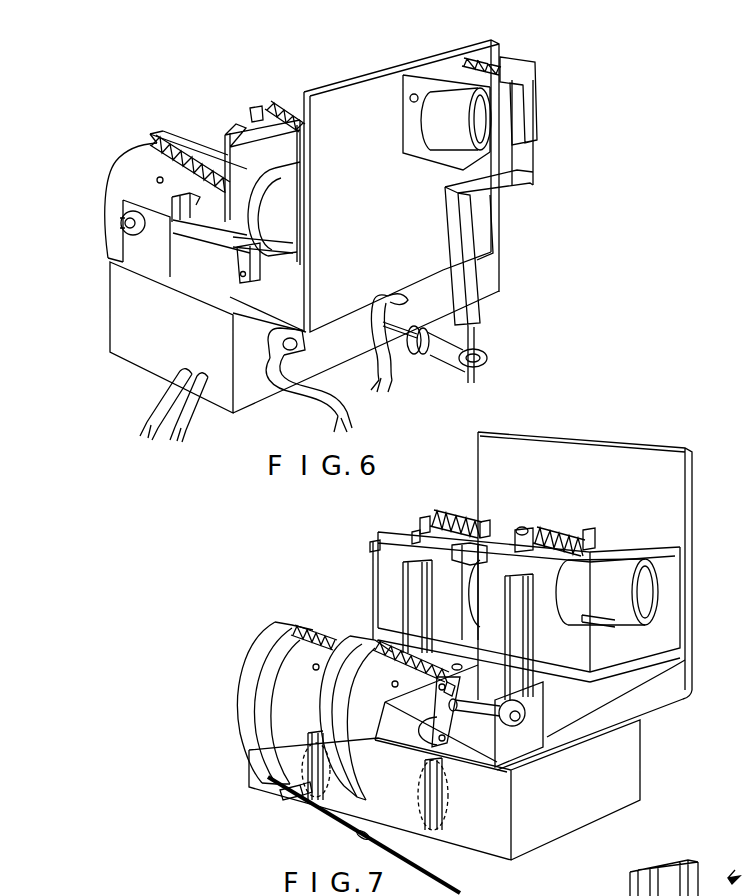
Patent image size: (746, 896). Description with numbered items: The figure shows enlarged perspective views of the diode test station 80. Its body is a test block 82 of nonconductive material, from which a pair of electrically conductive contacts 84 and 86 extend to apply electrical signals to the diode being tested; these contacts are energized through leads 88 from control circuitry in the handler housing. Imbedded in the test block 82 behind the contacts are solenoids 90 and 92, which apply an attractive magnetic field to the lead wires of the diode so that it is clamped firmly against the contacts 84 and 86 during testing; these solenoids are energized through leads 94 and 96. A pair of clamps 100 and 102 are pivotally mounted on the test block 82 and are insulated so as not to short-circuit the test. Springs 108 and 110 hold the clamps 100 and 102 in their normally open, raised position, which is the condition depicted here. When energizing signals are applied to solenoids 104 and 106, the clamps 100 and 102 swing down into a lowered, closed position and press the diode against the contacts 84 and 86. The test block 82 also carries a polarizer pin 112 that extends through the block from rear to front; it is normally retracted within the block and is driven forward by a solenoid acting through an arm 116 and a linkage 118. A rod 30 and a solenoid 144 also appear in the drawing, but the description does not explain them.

In FIG. 7, the rod 30 is at (368, 843).
In FIG. 6, the test station 80 is at (218, 105).
In FIG. 6, the test block 82 is at (133, 318).
In FIG. 7, the test block 82 is at (627, 775).
In FIG. 7, the electrically conductive contact 84 is at (447, 832).
In FIG. 7, the electrically conductive contact 86 is at (305, 797).
In FIG. 6, the lead 88 is at (194, 402).
In FIG. 7, the solenoid 90 is at (446, 820).
In FIG. 7, the solenoid 92 is at (300, 760).
In FIG. 6, the lead 94 is at (313, 398).
In FIG. 6, the lead 96 is at (387, 378).
In FIG. 6, the clamp 100 is at (133, 180).
In FIG. 7, the clamp 100 is at (357, 750).
In FIG. 7, the clamp 102 is at (253, 688).
In FIG. 7, the solenoid 104 is at (625, 602).
In FIG. 7, the solenoid 106 is at (467, 603).
In FIG. 7, the spring 108 is at (383, 643).
In FIG. 7, the spring 110 is at (313, 622).
In FIG. 7, the polarizer pin 112 is at (283, 798).
In FIG. 6, the arm 116 is at (470, 293).
In FIG. 6, the linkage 118 is at (444, 352).
In FIG. 6, the solenoid 144 is at (437, 128).